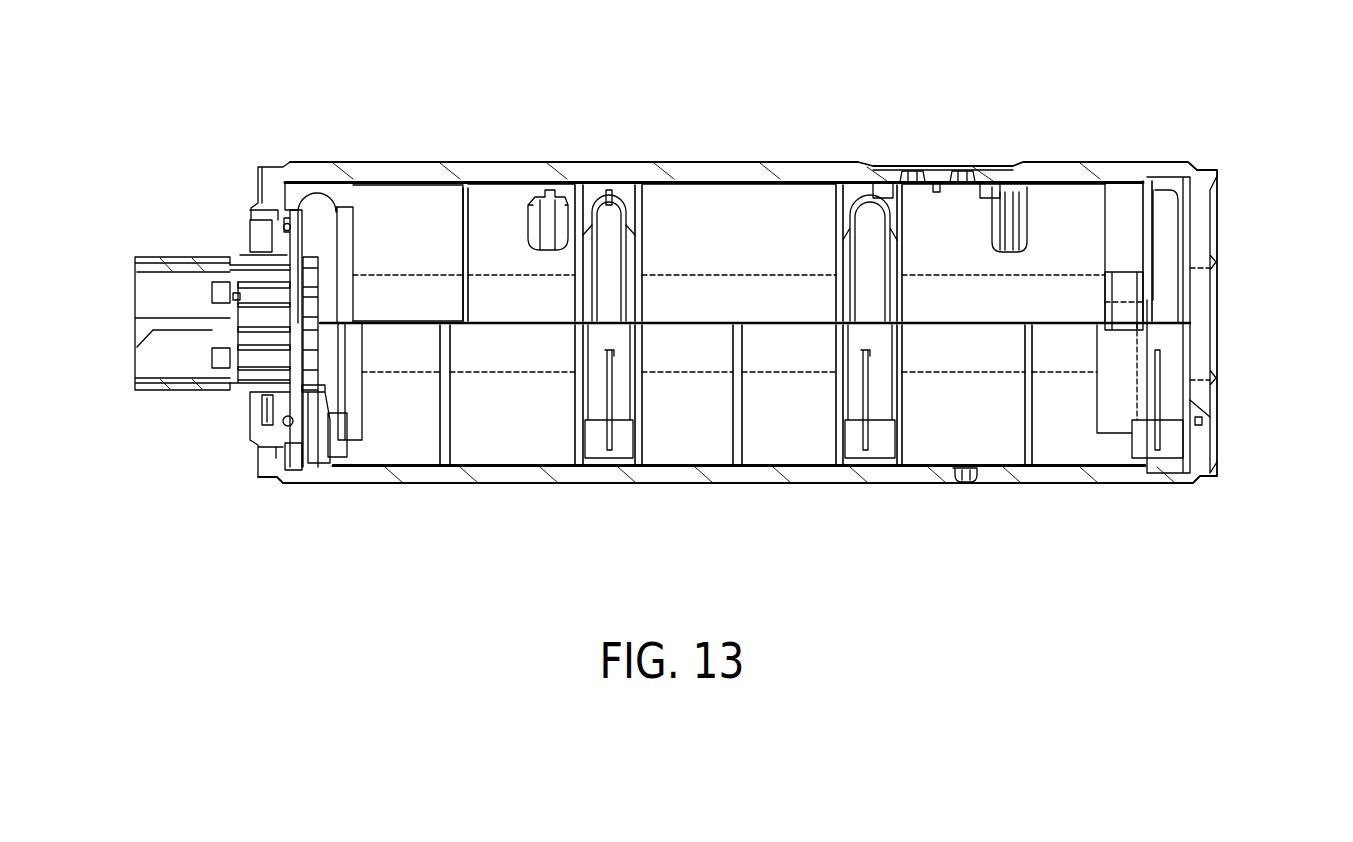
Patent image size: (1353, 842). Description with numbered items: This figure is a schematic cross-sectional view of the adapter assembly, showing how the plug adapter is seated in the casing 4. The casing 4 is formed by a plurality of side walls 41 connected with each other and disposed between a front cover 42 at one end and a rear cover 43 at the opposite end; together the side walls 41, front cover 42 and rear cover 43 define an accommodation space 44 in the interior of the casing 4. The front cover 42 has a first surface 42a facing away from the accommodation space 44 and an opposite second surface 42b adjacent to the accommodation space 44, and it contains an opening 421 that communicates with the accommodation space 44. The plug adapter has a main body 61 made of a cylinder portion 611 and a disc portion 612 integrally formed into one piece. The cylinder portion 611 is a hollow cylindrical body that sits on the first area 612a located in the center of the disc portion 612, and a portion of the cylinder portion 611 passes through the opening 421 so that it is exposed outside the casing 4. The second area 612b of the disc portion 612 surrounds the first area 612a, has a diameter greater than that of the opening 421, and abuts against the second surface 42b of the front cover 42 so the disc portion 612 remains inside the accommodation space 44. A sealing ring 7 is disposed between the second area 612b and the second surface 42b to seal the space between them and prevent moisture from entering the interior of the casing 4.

The casing 4 is at (809, 131).
The side walls 41 is at (568, 162).
The front cover 42 is at (271, 184).
The first surface 42a is at (283, 198).
The second surface 42b is at (292, 205).
The opening 421 is at (252, 256).
The rear cover 43 is at (1216, 309).
The accommodation space 44 is at (391, 222).
The sealing ring 7 is at (305, 216).
The main body 61 is at (203, 630).
The cylinder portion 611 is at (186, 392).
The disc portion 612 is at (253, 570).
The first area 612a is at (290, 392).
The second area 612b is at (305, 428).